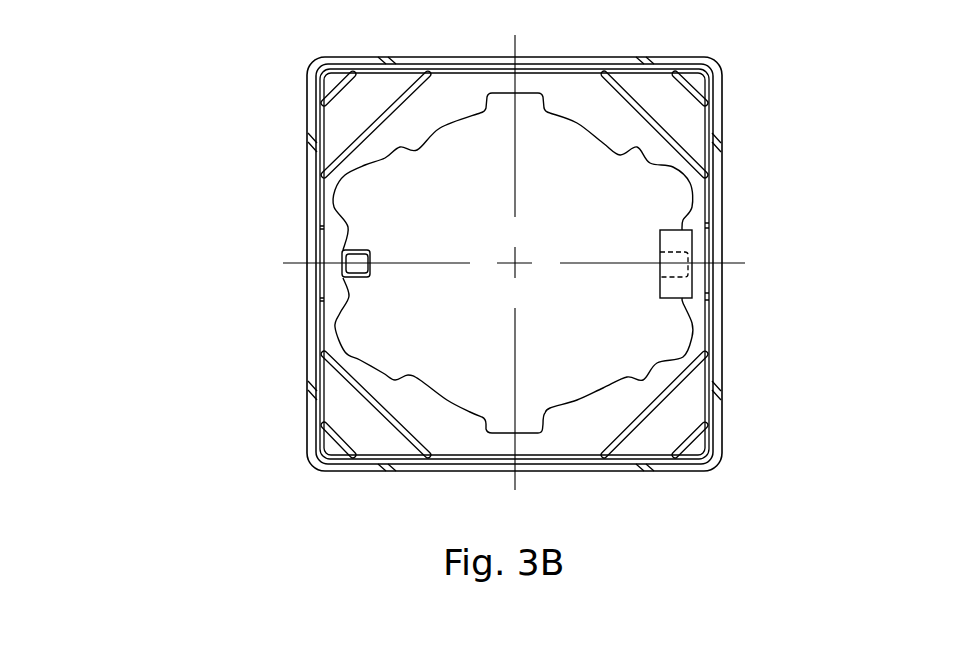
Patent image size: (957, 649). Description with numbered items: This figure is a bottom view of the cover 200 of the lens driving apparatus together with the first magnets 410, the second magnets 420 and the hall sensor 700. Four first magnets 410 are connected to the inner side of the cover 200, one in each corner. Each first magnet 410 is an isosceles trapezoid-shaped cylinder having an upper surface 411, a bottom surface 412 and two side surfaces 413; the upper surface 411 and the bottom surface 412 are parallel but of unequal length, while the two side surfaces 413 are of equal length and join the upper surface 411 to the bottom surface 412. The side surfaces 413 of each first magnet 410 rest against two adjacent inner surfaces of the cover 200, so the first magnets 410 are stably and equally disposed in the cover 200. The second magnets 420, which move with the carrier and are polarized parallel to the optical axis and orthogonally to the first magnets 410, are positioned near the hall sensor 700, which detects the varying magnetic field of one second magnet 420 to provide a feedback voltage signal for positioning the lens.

The cover 200 is at (313, 340).
The first magnet 410 is at (105, 23).
The upper surface 411 is at (320, 77).
The bottom surface 412 is at (330, 192).
The side surface 413 is at (370, 65).
The second magnet 420 is at (690, 284).
The hall sensor 700 is at (680, 238).